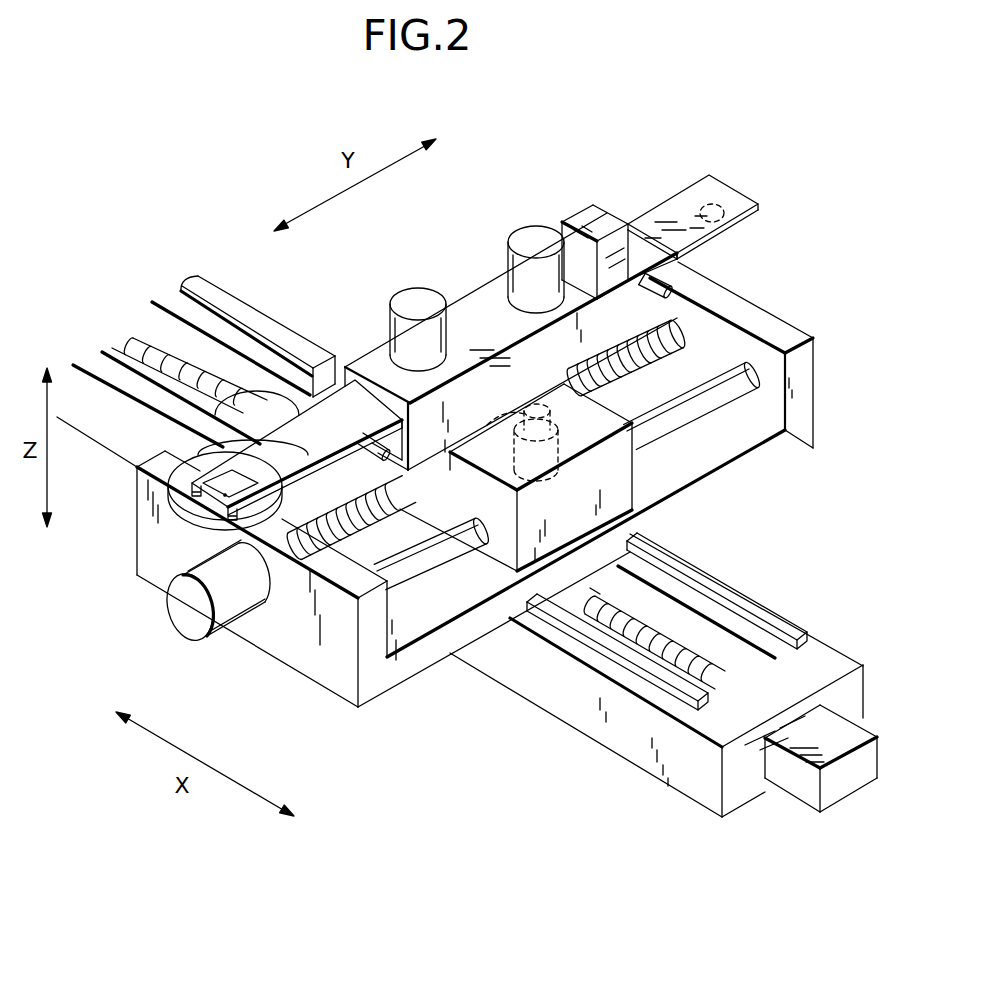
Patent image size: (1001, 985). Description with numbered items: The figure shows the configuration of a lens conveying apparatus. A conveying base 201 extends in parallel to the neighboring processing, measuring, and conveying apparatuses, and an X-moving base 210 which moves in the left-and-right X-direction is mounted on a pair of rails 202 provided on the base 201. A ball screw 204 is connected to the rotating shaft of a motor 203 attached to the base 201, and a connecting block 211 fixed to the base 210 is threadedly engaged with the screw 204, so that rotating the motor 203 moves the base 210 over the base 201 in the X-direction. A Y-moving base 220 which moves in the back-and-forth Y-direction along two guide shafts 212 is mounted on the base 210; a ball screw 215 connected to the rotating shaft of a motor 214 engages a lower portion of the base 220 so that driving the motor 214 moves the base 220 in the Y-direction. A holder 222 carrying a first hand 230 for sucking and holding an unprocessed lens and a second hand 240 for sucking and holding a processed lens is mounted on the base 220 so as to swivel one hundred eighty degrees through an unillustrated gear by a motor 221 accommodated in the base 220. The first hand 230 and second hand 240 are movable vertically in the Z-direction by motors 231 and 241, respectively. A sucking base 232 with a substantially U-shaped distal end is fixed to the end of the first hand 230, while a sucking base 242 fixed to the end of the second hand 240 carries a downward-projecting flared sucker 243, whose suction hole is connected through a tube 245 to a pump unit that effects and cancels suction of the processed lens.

The conveying base 201 is at (647, 763).
The rails 202 is at (582, 627).
The motor 203 is at (843, 790).
The ball screw 204 is at (675, 655).
The X-moving base 210 is at (295, 657).
The connecting block 211 is at (587, 587).
The guide shafts 212 is at (757, 390).
The motor 214 is at (184, 616).
The ball screw 215 is at (390, 505).
The Y-moving base 220 is at (605, 482).
The motor 221 is at (551, 466).
The holder 222 is at (469, 302).
The first hand 230 is at (230, 394).
The motor 231 is at (420, 302).
The sucking base 232 is at (137, 471).
The second hand 240 is at (600, 236).
The motor 241 is at (525, 240).
The sucking base 242 is at (678, 212).
The flared sucker 243 is at (735, 207).
The tube 245 is at (660, 282).